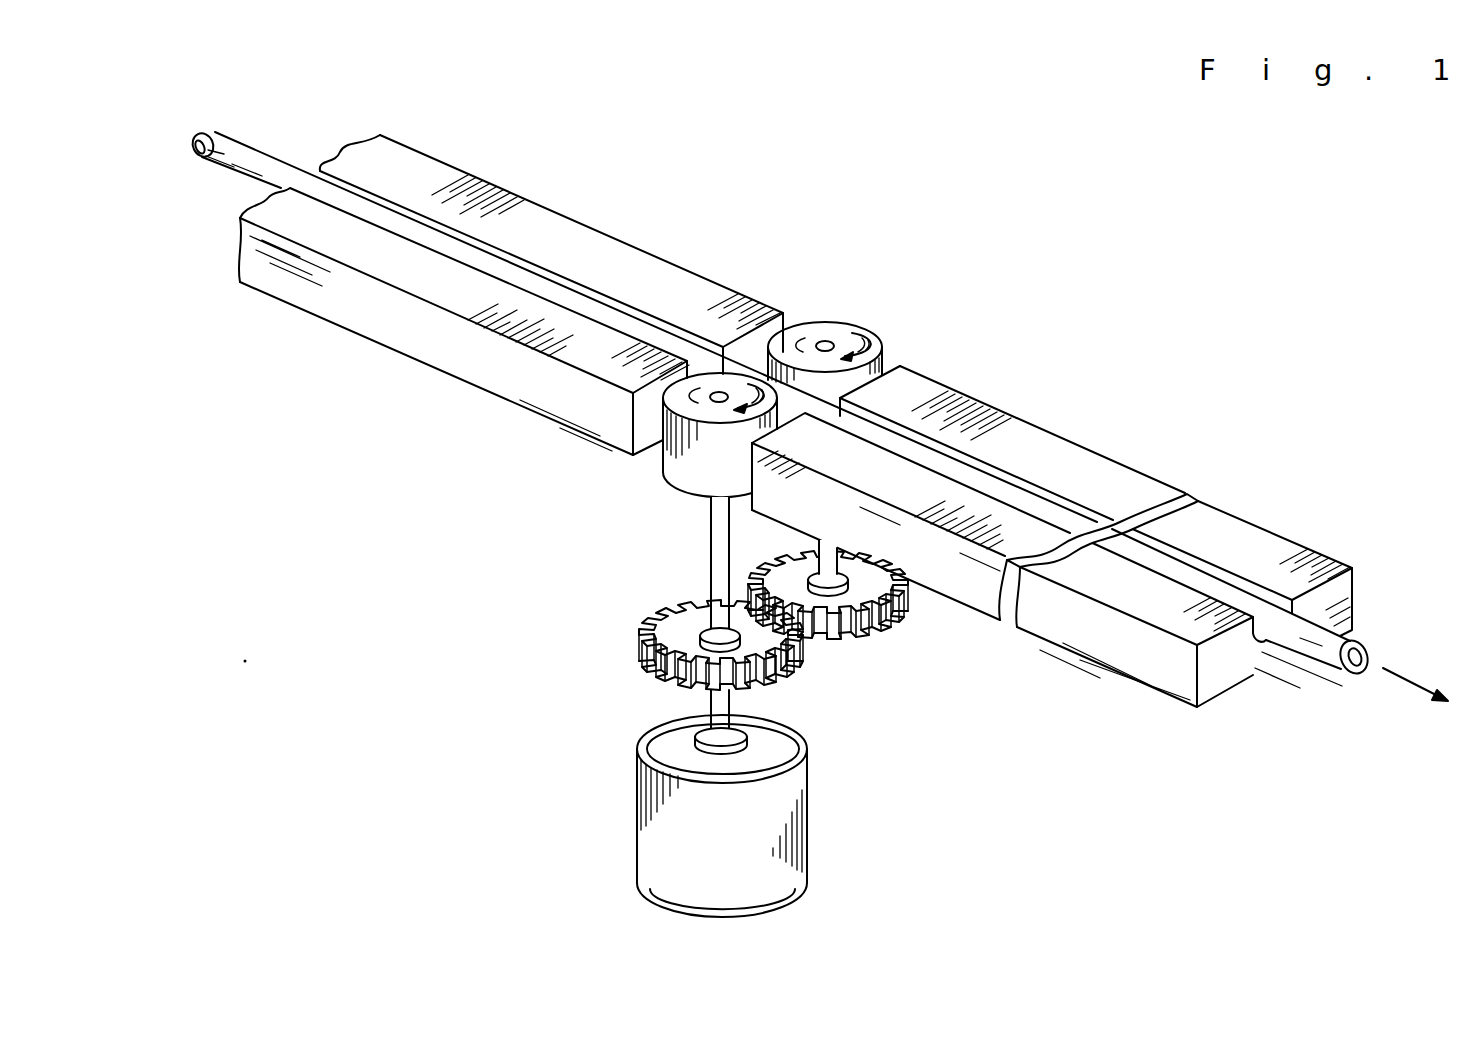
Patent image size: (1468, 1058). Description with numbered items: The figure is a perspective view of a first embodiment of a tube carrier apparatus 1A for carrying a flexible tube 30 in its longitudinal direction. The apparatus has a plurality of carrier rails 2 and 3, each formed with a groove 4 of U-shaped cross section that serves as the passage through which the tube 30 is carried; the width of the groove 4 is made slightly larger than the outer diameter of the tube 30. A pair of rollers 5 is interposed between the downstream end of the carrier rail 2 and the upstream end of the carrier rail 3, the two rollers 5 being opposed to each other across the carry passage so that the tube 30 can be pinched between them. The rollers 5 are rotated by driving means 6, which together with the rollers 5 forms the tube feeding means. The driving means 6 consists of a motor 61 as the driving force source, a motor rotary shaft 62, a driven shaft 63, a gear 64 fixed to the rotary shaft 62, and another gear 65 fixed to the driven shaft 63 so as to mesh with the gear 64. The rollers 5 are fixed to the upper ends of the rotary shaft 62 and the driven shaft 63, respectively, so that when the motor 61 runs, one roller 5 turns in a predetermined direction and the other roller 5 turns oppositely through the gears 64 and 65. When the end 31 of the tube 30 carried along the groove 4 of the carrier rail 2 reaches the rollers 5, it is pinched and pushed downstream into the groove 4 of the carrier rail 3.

The tube carrier apparatus 1A is at (1050, 214).
The carrier rail 2 is at (430, 343).
The carrier rail 3 is at (1075, 460).
The groove 4 is at (535, 262).
The rollers 5 is at (848, 335).
The driving means 6 is at (743, 707).
The tube 30 is at (243, 163).
The end of the tube 31 is at (1355, 681).
The motor 61 is at (662, 841).
The motor rotary shaft 62 is at (710, 539).
The driven shaft 63 is at (817, 553).
The gear 64 is at (640, 655).
The gear 65 is at (897, 618).